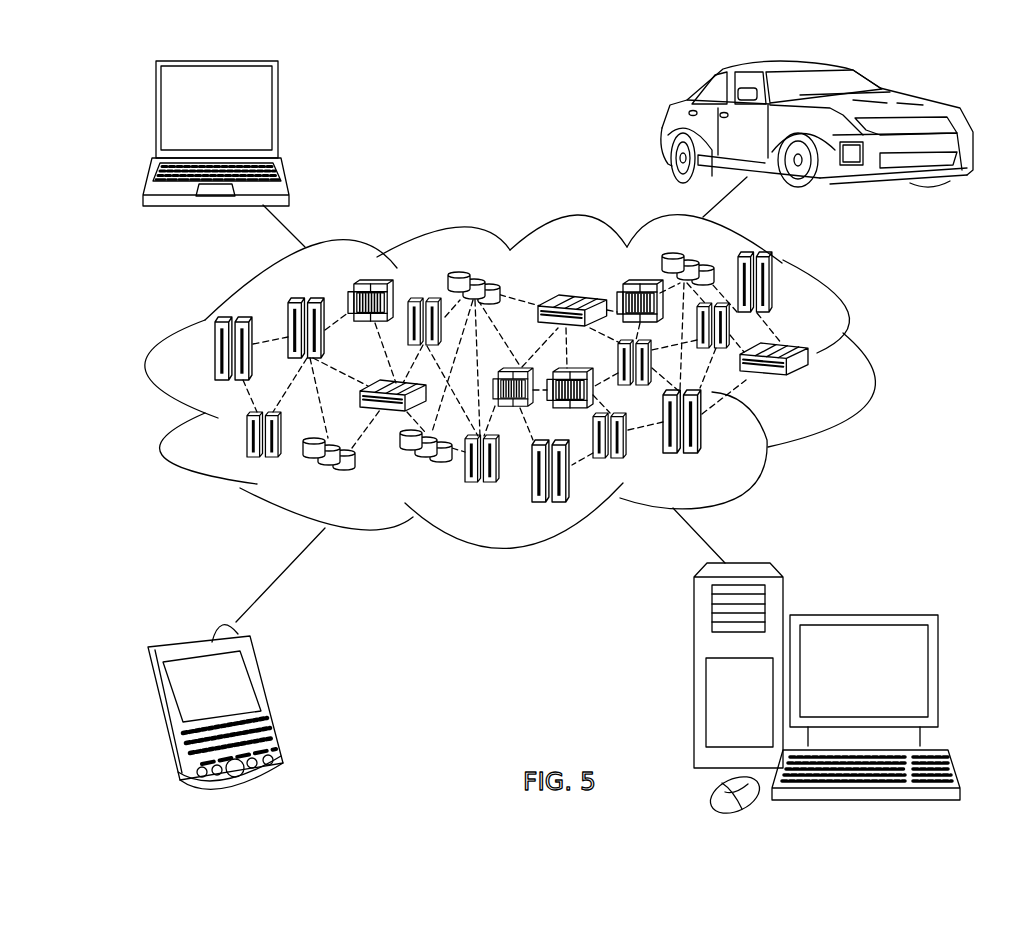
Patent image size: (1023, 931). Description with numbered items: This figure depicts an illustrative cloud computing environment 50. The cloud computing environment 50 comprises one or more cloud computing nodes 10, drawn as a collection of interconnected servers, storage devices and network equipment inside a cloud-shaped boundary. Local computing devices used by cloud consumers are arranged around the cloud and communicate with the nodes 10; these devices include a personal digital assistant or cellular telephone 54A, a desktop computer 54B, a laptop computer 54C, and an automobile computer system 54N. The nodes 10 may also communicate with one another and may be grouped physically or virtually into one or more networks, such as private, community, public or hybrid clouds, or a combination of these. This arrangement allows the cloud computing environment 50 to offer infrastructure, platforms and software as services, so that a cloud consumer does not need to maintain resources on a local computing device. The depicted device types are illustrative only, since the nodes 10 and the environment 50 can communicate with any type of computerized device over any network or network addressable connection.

The personal digital assistant (PDA) or cellular telephone 54A is at (268, 698).
The desktop computer 54B is at (862, 613).
The laptop computer 54C is at (278, 116).
The automobile computer system 54N is at (664, 128).
The cloud computing environment 50 is at (858, 356).
The cloud computing node 10 is at (815, 387).